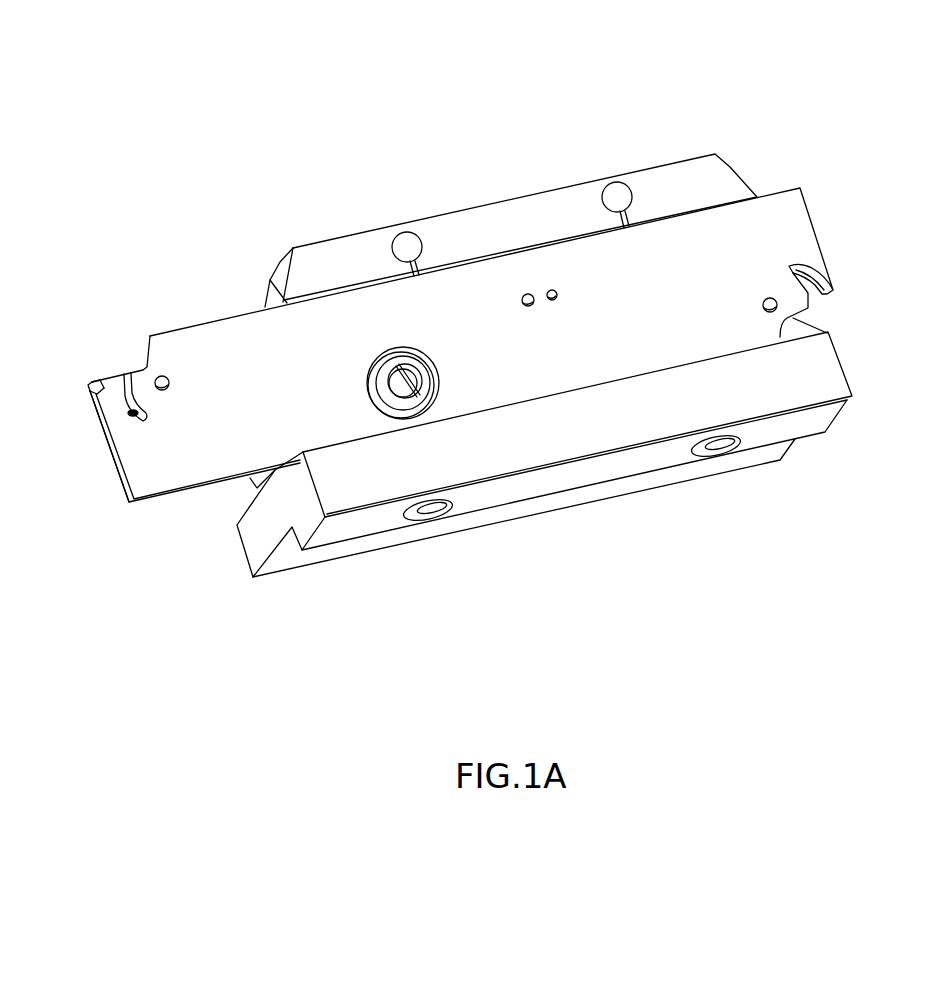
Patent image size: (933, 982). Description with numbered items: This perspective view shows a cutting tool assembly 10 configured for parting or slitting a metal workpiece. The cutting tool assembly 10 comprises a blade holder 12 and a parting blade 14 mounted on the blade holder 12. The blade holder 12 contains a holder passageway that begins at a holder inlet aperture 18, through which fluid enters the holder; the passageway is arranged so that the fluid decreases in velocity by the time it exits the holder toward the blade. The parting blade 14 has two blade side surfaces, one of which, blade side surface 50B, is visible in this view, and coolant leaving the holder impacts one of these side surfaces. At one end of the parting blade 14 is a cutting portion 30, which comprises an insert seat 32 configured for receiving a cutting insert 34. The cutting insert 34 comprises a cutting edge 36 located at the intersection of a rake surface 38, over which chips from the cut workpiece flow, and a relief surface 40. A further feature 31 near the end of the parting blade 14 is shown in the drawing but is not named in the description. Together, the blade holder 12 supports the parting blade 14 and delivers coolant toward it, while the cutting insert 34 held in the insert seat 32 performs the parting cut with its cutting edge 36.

The cutting tool assembly 10 is at (846, 106).
The blade holder 12 is at (726, 142).
The parting blade 14 is at (815, 178).
The holder inlet aperture 18 is at (430, 513).
The cutting portion 30 is at (95, 320).
The notch 31 is at (850, 304).
The insert seat 32 is at (112, 424).
The cutting insert 34 is at (130, 398).
The cutting edge 36 is at (87, 385).
The rake surface 38 is at (95, 381).
The relief surface 40 is at (92, 398).
The blade side surface 50B is at (298, 429).